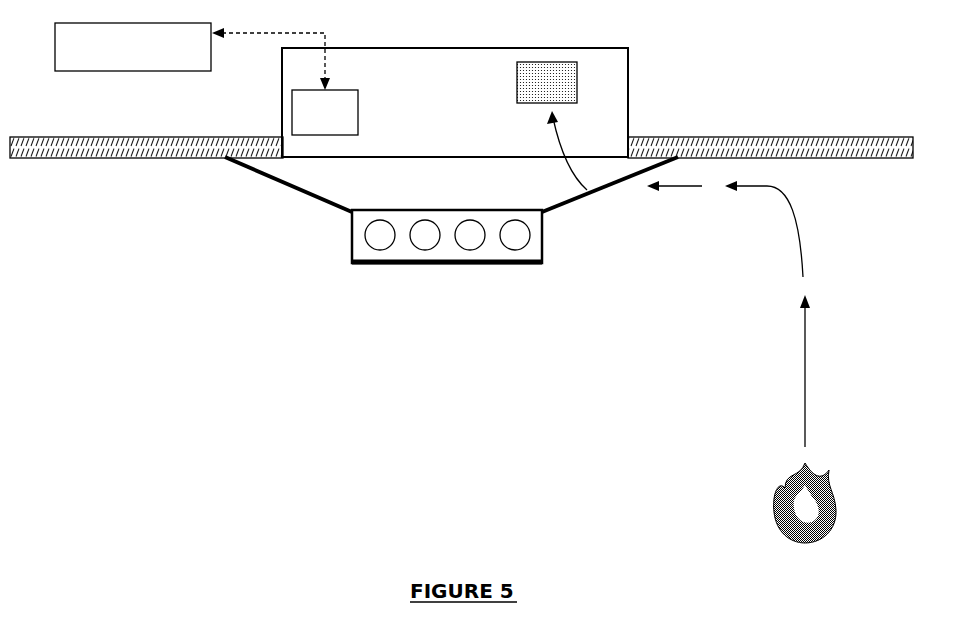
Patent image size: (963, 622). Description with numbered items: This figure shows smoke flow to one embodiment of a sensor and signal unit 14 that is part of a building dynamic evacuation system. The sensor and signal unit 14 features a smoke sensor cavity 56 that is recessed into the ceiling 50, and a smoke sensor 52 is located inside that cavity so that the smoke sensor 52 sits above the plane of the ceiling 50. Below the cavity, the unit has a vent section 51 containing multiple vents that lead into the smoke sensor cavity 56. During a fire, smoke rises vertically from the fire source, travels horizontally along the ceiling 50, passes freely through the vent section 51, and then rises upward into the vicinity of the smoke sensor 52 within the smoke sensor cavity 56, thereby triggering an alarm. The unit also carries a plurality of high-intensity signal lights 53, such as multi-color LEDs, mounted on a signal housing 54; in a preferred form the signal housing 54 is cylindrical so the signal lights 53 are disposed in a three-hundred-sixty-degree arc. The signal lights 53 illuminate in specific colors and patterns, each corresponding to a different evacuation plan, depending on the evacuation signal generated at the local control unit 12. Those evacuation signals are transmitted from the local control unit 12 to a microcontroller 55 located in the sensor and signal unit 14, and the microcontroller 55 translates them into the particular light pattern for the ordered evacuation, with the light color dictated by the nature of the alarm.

The local control unit 12 is at (133, 47).
The sensor and signal unit 14 is at (662, 108).
The ceiling 50 is at (145, 137).
The vent section 51 is at (290, 190).
The smoke sensor 52 is at (552, 126).
The signal lights 53 is at (505, 248).
The signal housing 54 is at (542, 238).
The microcontroller 55 is at (285, 81).
The smoke sensor cavity 56 is at (455, 102).